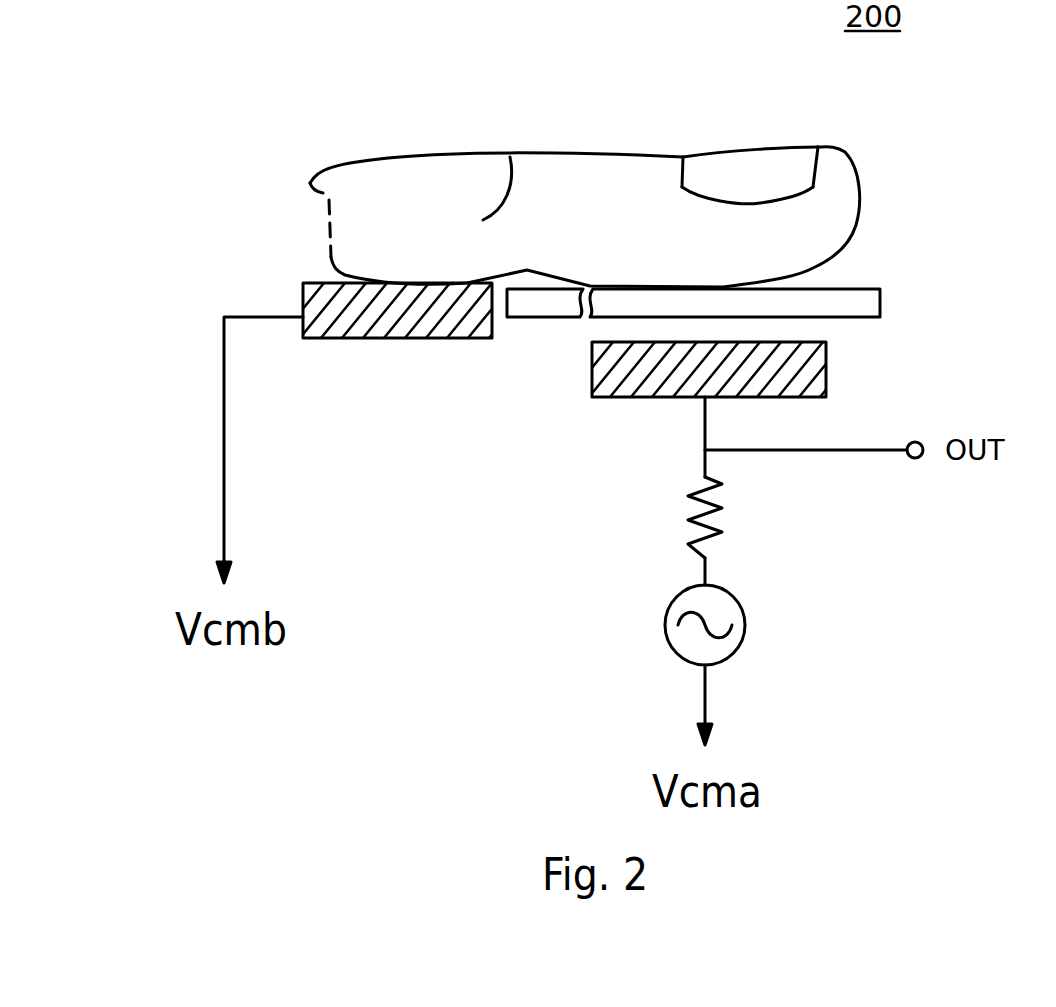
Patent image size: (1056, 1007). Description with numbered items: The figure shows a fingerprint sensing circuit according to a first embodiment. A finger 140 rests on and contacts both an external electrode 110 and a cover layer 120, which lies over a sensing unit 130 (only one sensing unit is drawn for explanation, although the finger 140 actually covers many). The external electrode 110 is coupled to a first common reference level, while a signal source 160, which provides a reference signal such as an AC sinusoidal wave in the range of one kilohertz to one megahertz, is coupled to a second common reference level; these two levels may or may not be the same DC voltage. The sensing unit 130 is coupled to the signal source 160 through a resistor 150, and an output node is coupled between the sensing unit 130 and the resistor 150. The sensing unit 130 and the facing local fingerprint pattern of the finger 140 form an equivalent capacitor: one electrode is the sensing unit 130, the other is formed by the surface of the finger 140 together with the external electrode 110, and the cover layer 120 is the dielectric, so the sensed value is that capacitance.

The external electrode 110 is at (303, 289).
The cover layer 120 is at (880, 300).
The sensing unit 130 is at (826, 365).
The finger 140 is at (583, 160).
The resistor 150 is at (733, 527).
The signal source 160 is at (745, 620).